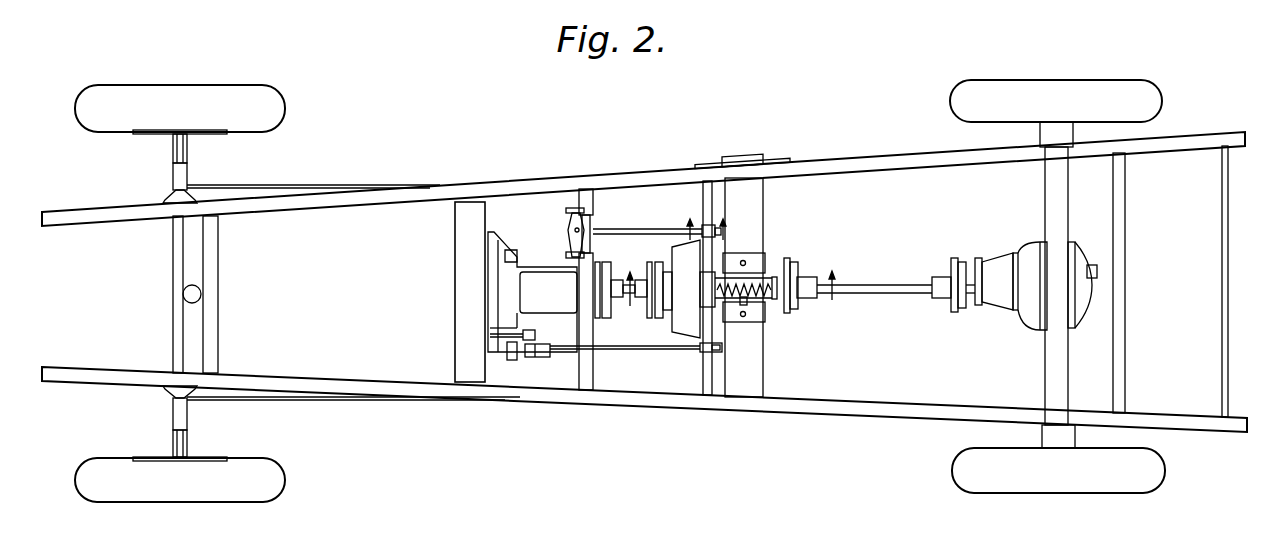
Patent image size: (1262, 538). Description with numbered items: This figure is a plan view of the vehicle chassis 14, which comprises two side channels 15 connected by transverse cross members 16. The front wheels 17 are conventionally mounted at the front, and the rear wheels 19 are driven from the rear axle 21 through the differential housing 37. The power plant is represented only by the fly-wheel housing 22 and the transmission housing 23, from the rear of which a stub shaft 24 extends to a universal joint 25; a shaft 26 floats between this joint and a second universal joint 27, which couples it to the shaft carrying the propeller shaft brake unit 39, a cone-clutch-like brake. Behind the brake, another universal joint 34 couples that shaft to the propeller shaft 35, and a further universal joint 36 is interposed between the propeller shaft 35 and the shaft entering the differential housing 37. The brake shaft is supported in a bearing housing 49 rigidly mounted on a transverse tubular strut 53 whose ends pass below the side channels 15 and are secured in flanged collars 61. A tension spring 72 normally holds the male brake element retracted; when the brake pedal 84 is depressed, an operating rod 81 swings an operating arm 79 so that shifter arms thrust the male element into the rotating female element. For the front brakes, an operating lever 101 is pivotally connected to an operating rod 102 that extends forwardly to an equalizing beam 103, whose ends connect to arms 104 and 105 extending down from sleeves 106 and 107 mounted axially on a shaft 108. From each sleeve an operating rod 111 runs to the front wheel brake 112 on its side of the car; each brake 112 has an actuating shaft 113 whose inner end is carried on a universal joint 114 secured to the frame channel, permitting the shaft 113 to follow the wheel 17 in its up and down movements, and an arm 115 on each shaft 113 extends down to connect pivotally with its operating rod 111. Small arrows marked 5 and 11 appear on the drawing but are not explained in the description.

The direction arrow 5 is at (730, 297).
The direction arrows 11 is at (704, 237).
The vehicle chassis 14 is at (644, 282).
The side channels 15 is at (306, 208).
The transverse cross members 16 is at (1114, 195).
The front wheels 17 is at (278, 113).
The rear wheels 19 is at (977, 113).
The rear axle 21 is at (1047, 372).
The fly-wheel housing 22 is at (498, 305).
The transmission housing 23 is at (552, 305).
The stub shaft 24 is at (583, 292).
The universal joint 25 is at (605, 319).
The shaft 26 is at (615, 280).
The second universal joint 27 is at (656, 319).
The universal joint 34 is at (787, 259).
The propeller shaft 35 is at (871, 284).
The universal joint 36 is at (957, 258).
The differential housing 37 is at (1003, 297).
The propeller shaft brake unit 39 is at (681, 248).
The bearing housing 49 is at (764, 324).
The tubular strut 53 is at (763, 205).
The flanged collars 61 is at (735, 157).
The tension spring 72 is at (768, 306).
The operating arm 79 is at (706, 351).
The operating rod 81 is at (570, 355).
The brake pedal 84 is at (530, 358).
The operating lever 101 is at (697, 222).
The operating rod 102 is at (640, 232).
The equalizing beam 103 is at (569, 222).
The arm 104 is at (570, 209).
The arm 105 is at (566, 255).
The sleeve 106 is at (594, 200).
The sleeve 107 is at (607, 289).
The shaft 108 is at (591, 246).
The operating rod 111 is at (307, 186).
The front wheel brake 112 is at (225, 134).
The actuating shaft 113 is at (173, 148).
The universal joint 114 is at (165, 198).
The arm 115 is at (173, 184).